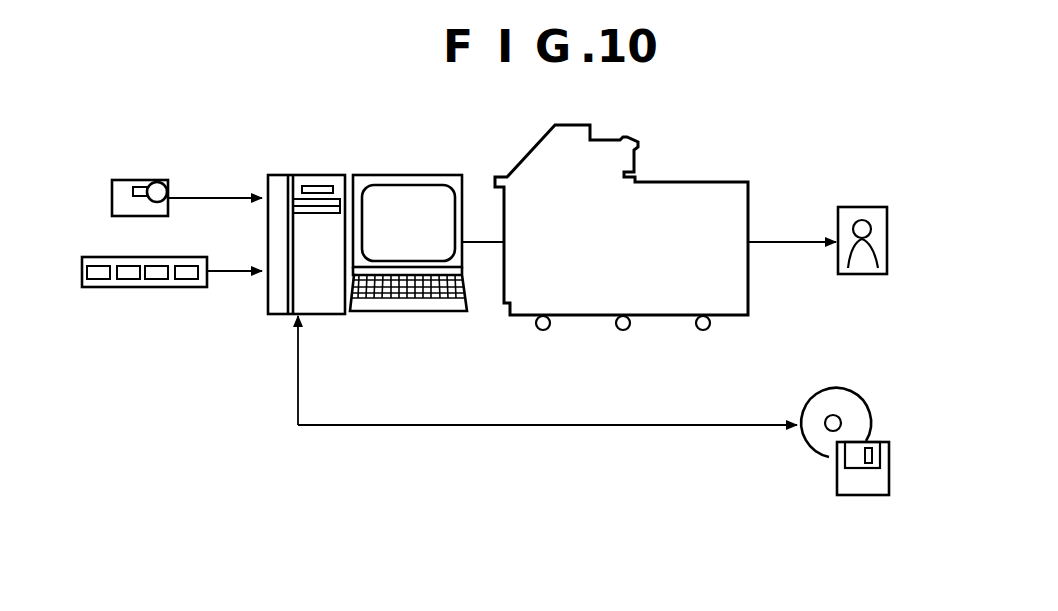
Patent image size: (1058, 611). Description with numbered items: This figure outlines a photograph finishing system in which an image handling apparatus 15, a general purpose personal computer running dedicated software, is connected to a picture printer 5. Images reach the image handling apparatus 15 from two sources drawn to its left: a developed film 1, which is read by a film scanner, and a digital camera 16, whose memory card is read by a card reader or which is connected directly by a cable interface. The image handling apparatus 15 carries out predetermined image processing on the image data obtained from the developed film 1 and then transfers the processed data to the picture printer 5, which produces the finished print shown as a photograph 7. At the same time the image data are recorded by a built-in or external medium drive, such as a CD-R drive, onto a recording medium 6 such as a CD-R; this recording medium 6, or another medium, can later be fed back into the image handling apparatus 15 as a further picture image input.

The digital camera 16 is at (142, 178).
The developed film 1 is at (145, 288).
The image handling apparatus 15 is at (395, 175).
The picture printer 5 is at (698, 182).
The photograph 7 is at (860, 207).
The recording medium 6 is at (830, 388).